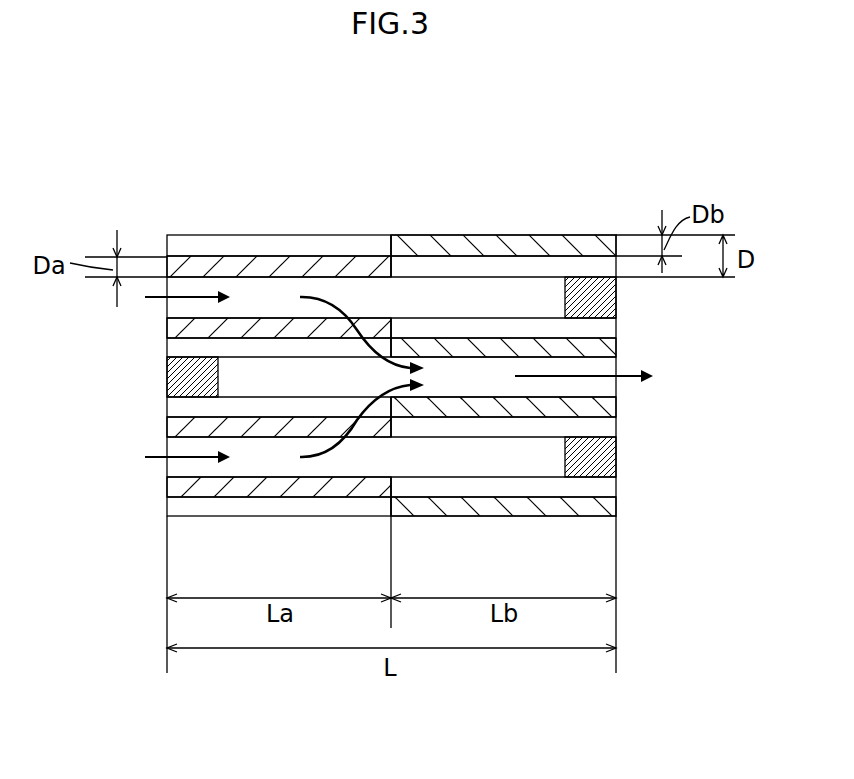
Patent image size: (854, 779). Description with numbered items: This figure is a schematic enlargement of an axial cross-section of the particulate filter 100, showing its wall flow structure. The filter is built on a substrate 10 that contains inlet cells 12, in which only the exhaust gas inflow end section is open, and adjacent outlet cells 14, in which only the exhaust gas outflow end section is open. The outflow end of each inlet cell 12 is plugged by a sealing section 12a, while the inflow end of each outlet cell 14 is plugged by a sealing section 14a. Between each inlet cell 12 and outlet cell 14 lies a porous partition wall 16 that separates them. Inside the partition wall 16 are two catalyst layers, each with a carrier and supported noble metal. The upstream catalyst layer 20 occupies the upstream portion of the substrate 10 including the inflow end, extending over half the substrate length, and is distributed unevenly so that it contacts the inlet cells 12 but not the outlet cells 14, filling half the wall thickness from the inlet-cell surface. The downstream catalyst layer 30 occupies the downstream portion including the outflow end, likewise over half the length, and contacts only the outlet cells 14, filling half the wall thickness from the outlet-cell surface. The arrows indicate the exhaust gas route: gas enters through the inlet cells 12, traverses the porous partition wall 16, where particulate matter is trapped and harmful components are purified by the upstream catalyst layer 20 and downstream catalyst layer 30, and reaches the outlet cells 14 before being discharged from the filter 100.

The particulate filter 100 is at (636, 147).
The substrate 10 is at (478, 232).
The inlet cell 12 is at (347, 297).
The sealing section 12a is at (612, 300).
The outlet cell 14 is at (483, 382).
The sealing section 14a is at (170, 373).
The partition wall 16 is at (422, 316).
The upstream catalyst layer 20 is at (192, 265).
The downstream catalyst layer 30 is at (583, 243).